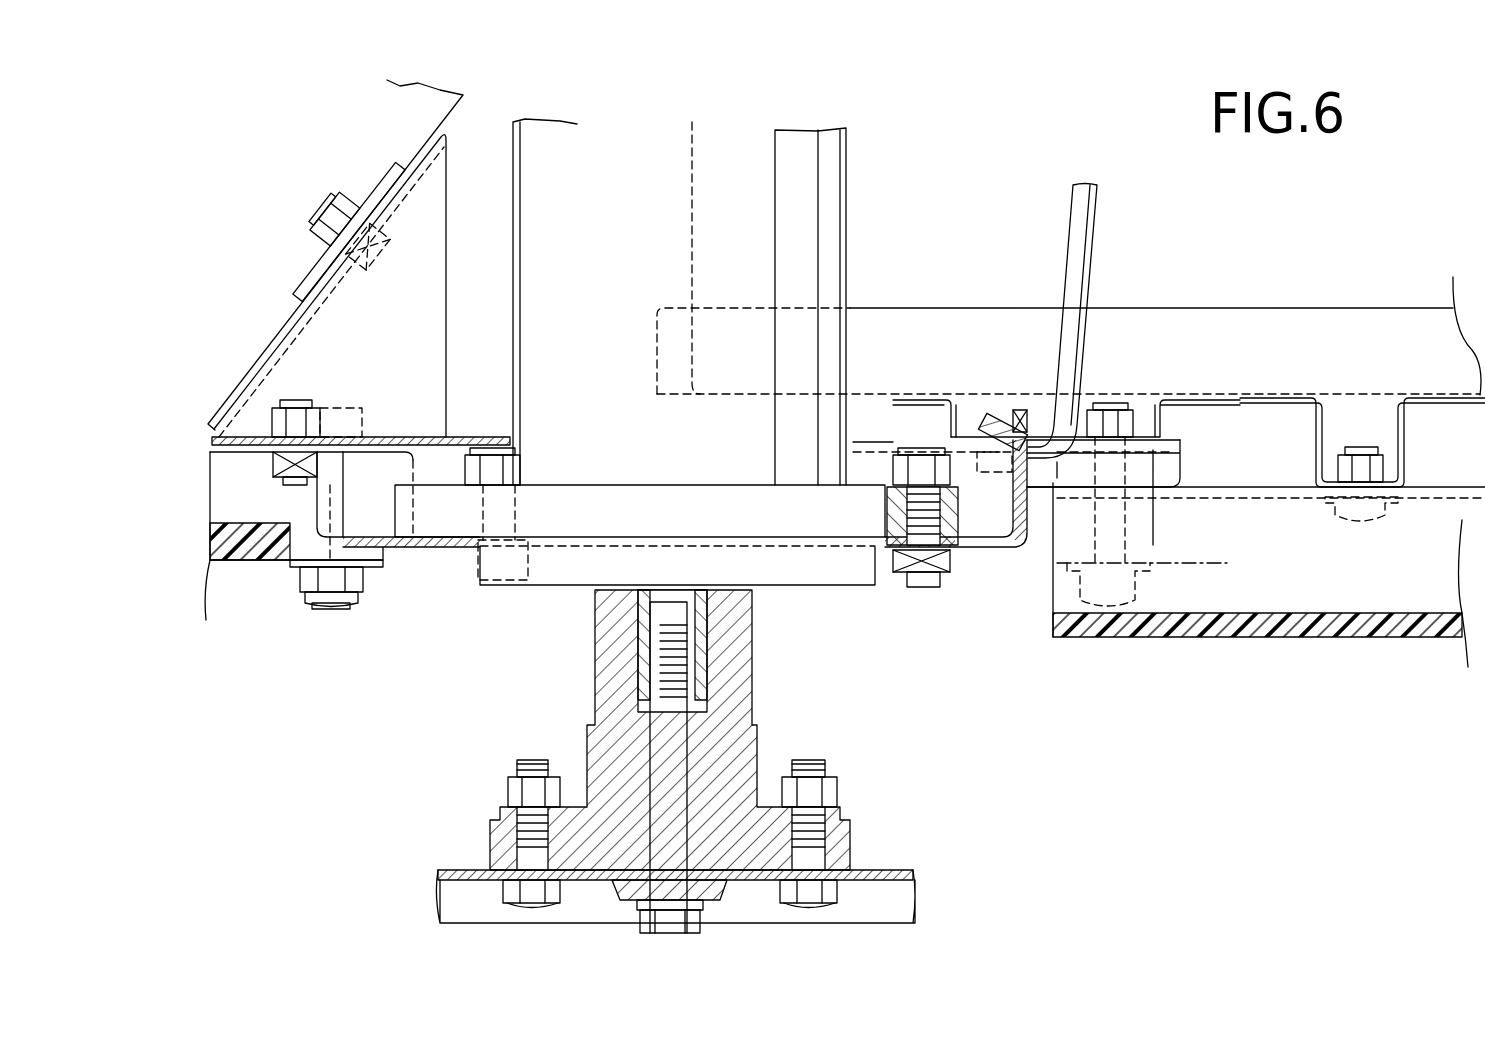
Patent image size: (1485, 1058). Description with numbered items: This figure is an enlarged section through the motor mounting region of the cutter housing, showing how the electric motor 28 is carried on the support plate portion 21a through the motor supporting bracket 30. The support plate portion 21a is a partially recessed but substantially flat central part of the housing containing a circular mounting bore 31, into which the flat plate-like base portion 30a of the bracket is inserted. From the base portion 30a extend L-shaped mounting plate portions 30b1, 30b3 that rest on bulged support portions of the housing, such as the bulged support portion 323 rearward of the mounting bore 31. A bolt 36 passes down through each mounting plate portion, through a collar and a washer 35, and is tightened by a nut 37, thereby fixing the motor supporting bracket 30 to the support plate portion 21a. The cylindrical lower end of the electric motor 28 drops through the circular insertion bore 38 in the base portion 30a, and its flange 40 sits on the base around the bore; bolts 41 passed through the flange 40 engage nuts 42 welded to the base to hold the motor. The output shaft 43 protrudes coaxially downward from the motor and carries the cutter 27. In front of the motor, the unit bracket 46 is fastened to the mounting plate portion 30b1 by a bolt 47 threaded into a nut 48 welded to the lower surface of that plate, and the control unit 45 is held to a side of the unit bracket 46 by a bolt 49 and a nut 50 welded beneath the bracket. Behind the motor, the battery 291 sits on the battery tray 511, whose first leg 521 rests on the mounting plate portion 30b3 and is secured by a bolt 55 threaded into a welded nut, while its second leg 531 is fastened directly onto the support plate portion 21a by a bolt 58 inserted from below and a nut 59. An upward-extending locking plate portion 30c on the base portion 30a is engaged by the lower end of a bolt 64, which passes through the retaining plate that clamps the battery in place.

The support plate portion 21a is at (1247, 485).
The cutter 27 is at (883, 873).
The electric motor 28 is at (636, 247).
The battery 291 is at (1314, 248).
The motor supporting bracket 30 is at (451, 556).
The base portion 30a is at (413, 443).
The mounting plate portion 30b1 is at (212, 412).
The mounting plate portion 30b3 is at (1165, 445).
The locking plate portion 30c is at (1020, 440).
The mounting bore 31 is at (313, 523).
The bulged support portion 323 is at (1170, 467).
The washer 35 is at (293, 565).
The bolt 36 is at (1112, 420).
The nut 37 is at (1133, 590).
The insertion bore 38 is at (873, 540).
The flange 40 is at (665, 510).
The bolt 41 is at (498, 458).
The nut 42 is at (520, 557).
The output shaft 43 is at (642, 667).
The control unit 45 is at (185, 400).
The unit bracket 46 is at (422, 300).
The bolt 47 is at (297, 417).
The nut 48 is at (268, 457).
The bolt 49 is at (323, 212).
The nut 50 is at (413, 212).
The battery tray 511 is at (1345, 327).
The first leg 521 is at (960, 402).
The second leg 531 is at (1400, 428).
The bolt 55 is at (1003, 413).
The bolt 58 is at (1350, 522).
The nut 59 is at (1383, 463).
The bolt 64 is at (1085, 214).